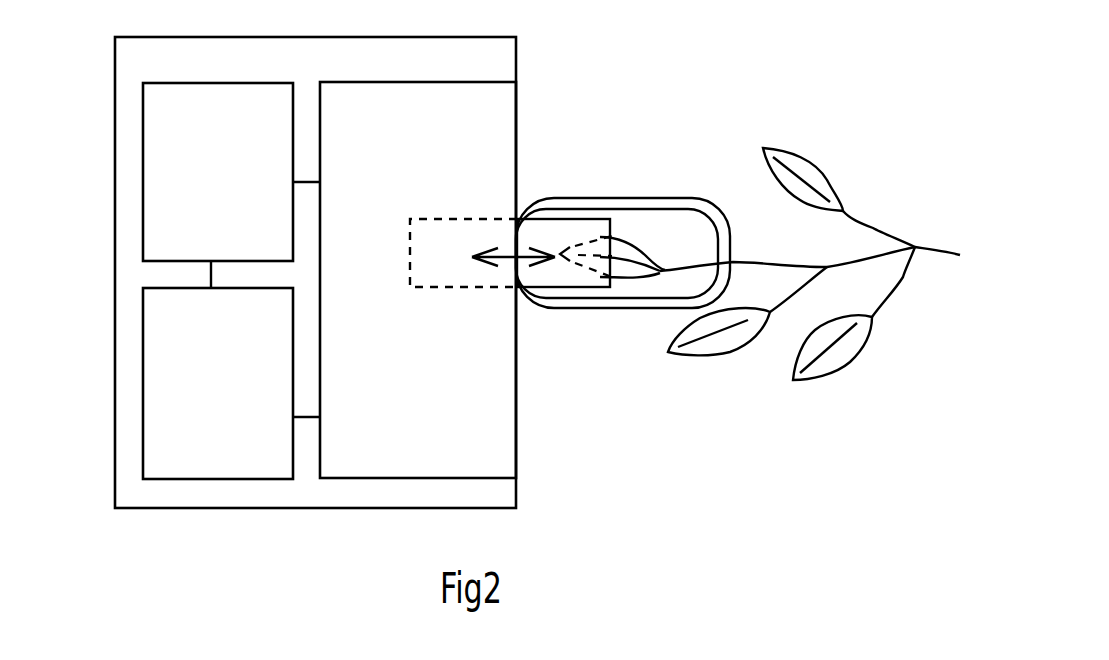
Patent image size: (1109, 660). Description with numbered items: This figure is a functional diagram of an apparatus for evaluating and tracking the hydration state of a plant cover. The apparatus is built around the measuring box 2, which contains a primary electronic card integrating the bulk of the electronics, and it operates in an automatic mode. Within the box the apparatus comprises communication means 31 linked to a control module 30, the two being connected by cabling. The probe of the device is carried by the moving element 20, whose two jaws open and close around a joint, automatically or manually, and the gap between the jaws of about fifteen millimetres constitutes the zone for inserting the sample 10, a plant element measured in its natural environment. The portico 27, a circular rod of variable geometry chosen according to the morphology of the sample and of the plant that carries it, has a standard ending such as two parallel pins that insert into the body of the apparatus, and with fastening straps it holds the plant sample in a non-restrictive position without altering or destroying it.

The measuring box 2 is at (517, 138).
The control module 30 is at (143, 182).
The communication means 31 is at (143, 392).
The moving element 20 is at (552, 279).
The portico 27 is at (621, 205).
The sample 10 is at (637, 271).